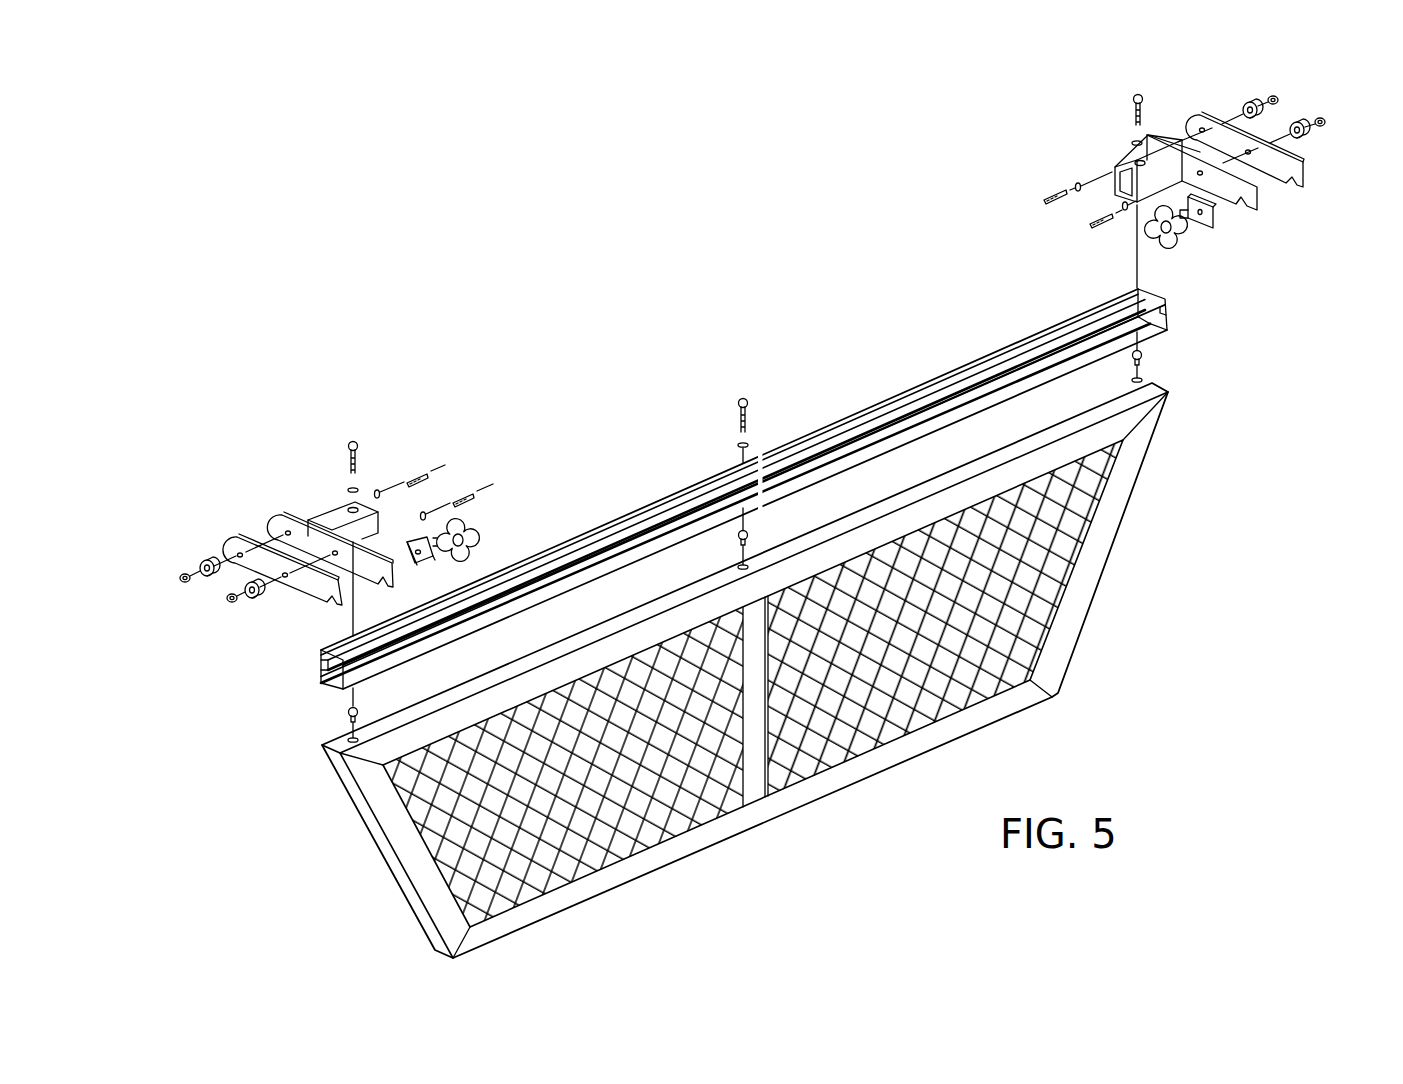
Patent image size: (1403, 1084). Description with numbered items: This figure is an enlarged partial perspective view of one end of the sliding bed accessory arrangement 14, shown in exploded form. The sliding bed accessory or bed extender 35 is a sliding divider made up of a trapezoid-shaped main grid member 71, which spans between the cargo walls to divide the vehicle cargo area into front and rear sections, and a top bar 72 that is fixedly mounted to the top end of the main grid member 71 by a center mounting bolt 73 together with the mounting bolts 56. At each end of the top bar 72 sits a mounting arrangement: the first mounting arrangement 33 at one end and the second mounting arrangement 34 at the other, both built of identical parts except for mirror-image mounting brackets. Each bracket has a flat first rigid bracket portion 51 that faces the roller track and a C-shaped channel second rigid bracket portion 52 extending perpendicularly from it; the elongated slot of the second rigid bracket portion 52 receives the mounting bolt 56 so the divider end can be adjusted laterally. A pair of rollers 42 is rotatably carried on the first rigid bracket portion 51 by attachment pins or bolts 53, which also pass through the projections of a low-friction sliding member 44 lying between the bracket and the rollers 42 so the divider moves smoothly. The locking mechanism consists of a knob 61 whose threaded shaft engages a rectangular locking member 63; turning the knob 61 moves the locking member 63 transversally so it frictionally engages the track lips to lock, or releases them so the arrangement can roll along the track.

The sliding bed accessory arrangement 14 is at (566, 324).
The first mounting arrangement 33 is at (213, 514).
The second mounting arrangement 34 is at (1078, 147).
The sliding bed accessory or bed extender 35 is at (342, 868).
The rollers 42 is at (228, 590).
The sliding member 44 is at (300, 597).
The first rigid bracket portion 51 is at (277, 521).
The second rigid bracket portion 52 is at (328, 512).
The attachment pins or bolts 53 is at (434, 481).
The mounting bolt 56 is at (358, 454).
The knob 61 is at (476, 518).
The locking member 63 is at (425, 568).
The main grid member 71 is at (1109, 583).
The top bar 72 is at (886, 400).
The center mounting bolt 73 is at (738, 418).